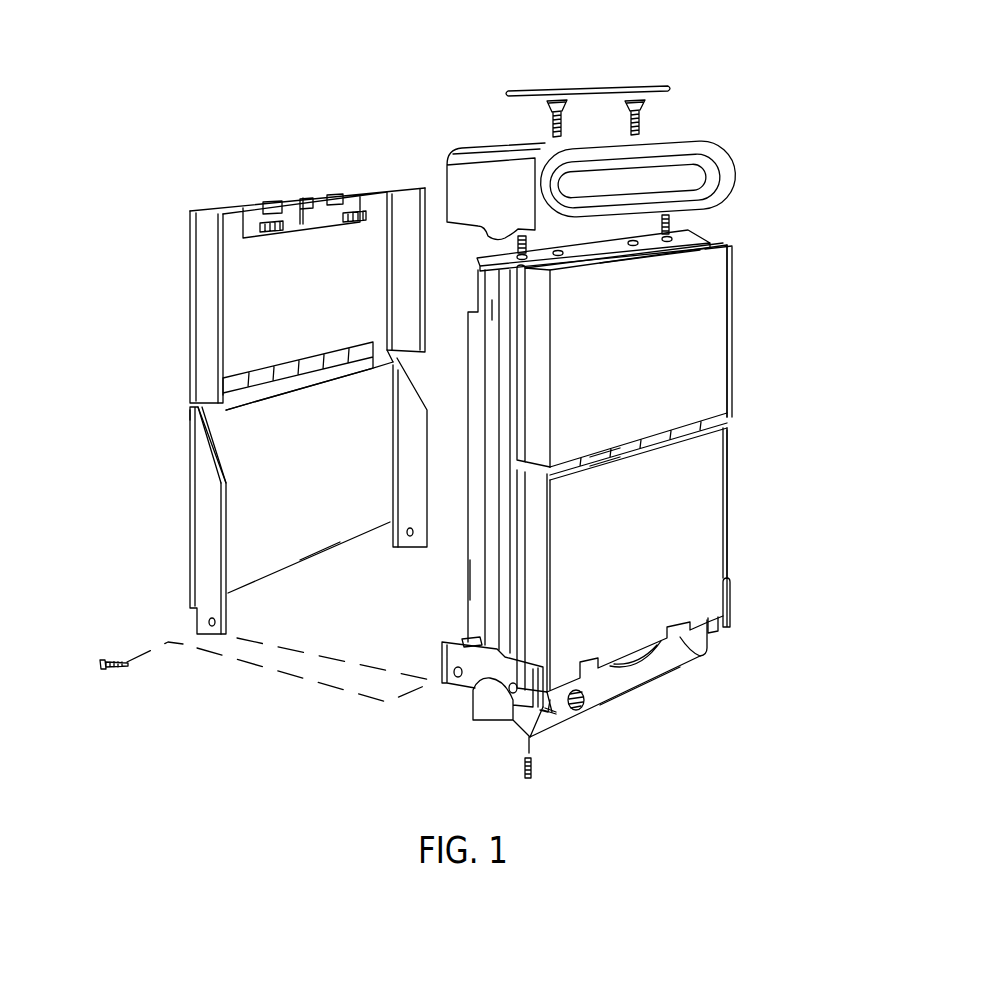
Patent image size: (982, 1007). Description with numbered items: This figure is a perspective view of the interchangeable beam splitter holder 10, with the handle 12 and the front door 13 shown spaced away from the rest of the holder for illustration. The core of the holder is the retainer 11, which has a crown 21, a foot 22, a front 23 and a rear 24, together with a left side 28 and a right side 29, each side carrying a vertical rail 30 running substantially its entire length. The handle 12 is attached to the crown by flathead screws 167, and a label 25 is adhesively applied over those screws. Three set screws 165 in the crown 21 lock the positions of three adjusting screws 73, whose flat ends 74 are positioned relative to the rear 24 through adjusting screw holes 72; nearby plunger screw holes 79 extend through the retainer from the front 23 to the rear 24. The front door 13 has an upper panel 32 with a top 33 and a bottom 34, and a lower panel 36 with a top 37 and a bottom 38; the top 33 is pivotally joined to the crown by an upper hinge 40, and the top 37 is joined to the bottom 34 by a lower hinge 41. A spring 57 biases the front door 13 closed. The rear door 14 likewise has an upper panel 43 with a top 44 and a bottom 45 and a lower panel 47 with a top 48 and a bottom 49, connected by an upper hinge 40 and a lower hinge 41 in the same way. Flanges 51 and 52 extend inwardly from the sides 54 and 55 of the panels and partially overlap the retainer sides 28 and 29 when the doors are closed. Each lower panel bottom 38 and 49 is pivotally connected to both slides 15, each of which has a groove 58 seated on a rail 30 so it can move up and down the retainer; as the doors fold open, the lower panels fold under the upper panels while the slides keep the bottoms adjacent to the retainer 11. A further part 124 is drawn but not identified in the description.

The interchangeable beam splitter holder 10 is at (406, 108).
The retainer 11 is at (677, 665).
The handle 12 is at (731, 165).
The front door 13 is at (188, 480).
The rear door 14 is at (730, 415).
The slide 15 is at (546, 708).
The crown 21 is at (732, 248).
The foot 22 is at (640, 690).
The front 23 is at (468, 577).
The rear 24 is at (684, 642).
The label 25 is at (592, 88).
The left side 28 is at (729, 450).
The right side 29 is at (480, 403).
The vertical rail 30 is at (499, 348).
The upper panel 32 is at (302, 300).
The top 33 is at (232, 205).
The bottom 34 is at (390, 350).
The lower panel 36 is at (313, 492).
The top 37 is at (207, 407).
The bottom 38 is at (320, 553).
The upper hinge 40 is at (700, 238).
The lower hinge 41 is at (658, 440).
The upper panel 43 is at (648, 359).
The top 44 is at (643, 262).
The bottom 45 is at (606, 448).
The lower panel 47 is at (643, 567).
The top 48 is at (607, 458).
The bottom 49 is at (660, 638).
The flange 51 is at (732, 302).
The flange 52 is at (727, 505).
The side 54 is at (732, 344).
The side 55 is at (727, 482).
The spring 57 is at (305, 195).
The groove 58 is at (493, 652).
The adjusting screw hole 72 is at (556, 700).
The adjusting screw 73 is at (552, 703).
The flat end 74 is at (550, 710).
The plunger screw hole 79 is at (585, 705).
The end block 124 is at (479, 698).
The set screw 165 is at (528, 780).
The flathead screw 167 is at (548, 123).